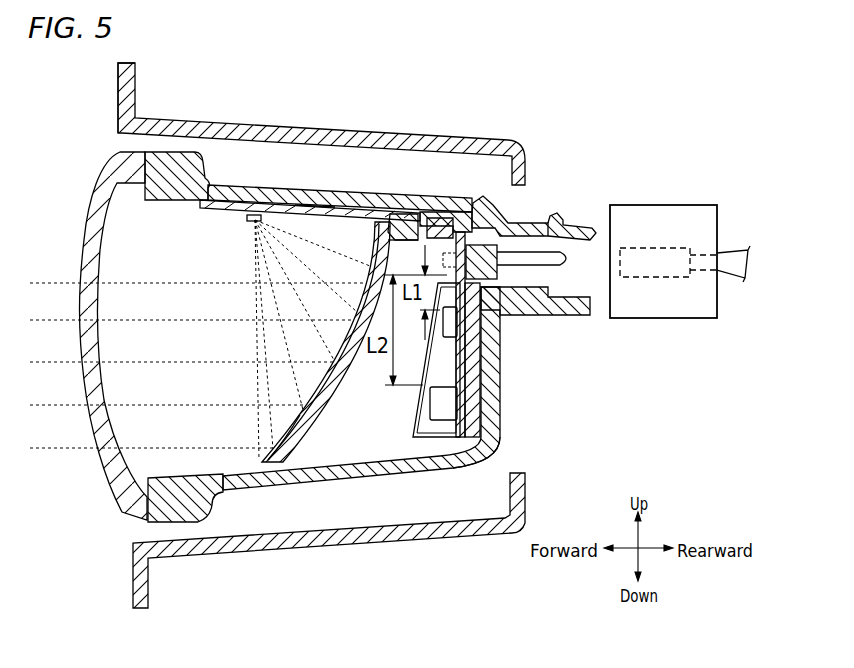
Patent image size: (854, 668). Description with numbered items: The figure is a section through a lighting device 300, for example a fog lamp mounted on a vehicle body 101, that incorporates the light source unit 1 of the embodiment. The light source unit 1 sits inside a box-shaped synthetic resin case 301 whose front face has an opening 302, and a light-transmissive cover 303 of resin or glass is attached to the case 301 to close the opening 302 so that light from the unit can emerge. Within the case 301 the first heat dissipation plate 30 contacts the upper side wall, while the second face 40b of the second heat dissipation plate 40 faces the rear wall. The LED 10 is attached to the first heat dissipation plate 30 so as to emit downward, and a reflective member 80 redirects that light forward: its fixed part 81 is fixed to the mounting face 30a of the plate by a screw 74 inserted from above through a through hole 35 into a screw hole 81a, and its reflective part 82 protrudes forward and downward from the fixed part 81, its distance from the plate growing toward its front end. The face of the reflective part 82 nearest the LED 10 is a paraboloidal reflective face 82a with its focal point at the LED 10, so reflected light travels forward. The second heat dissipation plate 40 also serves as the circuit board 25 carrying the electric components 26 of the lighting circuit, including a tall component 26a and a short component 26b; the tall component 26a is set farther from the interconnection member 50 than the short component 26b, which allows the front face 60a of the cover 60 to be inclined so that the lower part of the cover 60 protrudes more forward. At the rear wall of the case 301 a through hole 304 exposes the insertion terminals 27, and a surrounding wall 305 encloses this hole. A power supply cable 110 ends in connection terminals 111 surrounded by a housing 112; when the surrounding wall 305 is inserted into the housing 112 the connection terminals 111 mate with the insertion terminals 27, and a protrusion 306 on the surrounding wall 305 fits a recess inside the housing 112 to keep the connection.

The light source unit 1 is at (203, 218).
The LED 10 is at (252, 223).
The circuit board 25 is at (460, 437).
The electric components 26 is at (520, 379).
The tall component 26a is at (447, 405).
The short component 26b is at (450, 330).
The insertion terminals 27 is at (561, 270).
The first heat dissipation plate 30 is at (270, 205).
The mounting face 30a is at (315, 225).
The through hole 35 is at (432, 218).
The second heat dissipation plate 40 is at (492, 395).
The second face 40b is at (496, 438).
The interconnection member 50 is at (470, 230).
The cover 60 is at (413, 393).
The front face 60a is at (415, 352).
The screw 74 is at (408, 214).
The reflective member 80 is at (337, 402).
The fixed part 81 is at (393, 226).
The screw hole 81a is at (387, 242).
The reflective part 82 is at (312, 417).
The reflective face 82a is at (280, 425).
The vehicle body 101 is at (130, 105).
The power supply cable 110 is at (730, 257).
The connection terminals 111 is at (650, 272).
The housing 112 is at (667, 210).
The lighting device 300 is at (276, 487).
The case 301 is at (347, 188).
The opening 302 is at (157, 478).
The cover 303 is at (115, 480).
The through hole 304 is at (523, 282).
The surrounding wall 305 is at (532, 238).
The protrusion 306 is at (550, 218).